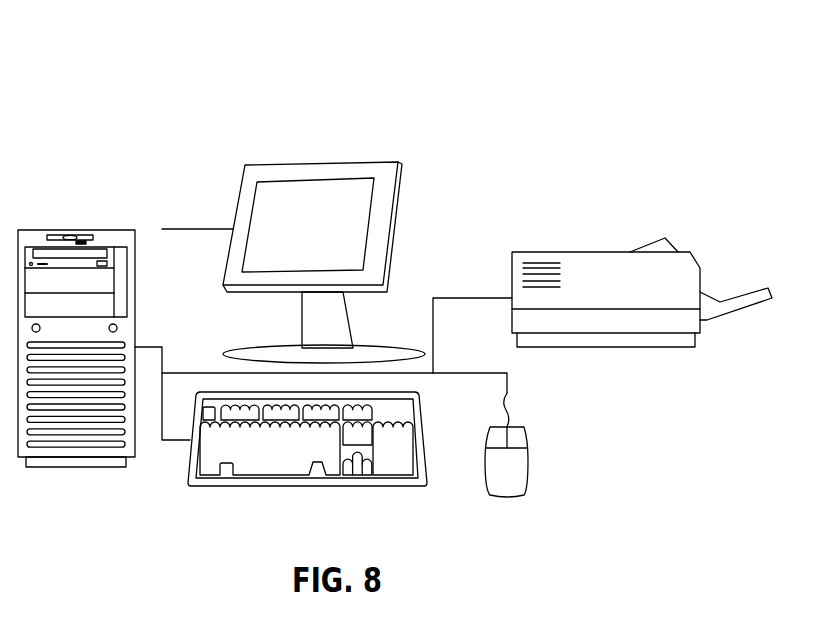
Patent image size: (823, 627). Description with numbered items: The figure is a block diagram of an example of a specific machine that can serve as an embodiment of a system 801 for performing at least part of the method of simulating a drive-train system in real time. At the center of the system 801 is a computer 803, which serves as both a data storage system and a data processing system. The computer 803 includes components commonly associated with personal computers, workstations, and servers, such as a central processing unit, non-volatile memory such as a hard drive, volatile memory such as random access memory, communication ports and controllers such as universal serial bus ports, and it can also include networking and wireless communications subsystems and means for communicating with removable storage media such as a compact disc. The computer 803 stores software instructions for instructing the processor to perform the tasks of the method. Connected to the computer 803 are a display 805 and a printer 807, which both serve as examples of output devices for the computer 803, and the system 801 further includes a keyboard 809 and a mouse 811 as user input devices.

The system 801 is at (313, 58).
The computer 803 is at (78, 228).
The display 805 is at (317, 162).
The printer 807 is at (607, 250).
The keyboard 809 is at (305, 487).
The mouse 811 is at (507, 502).